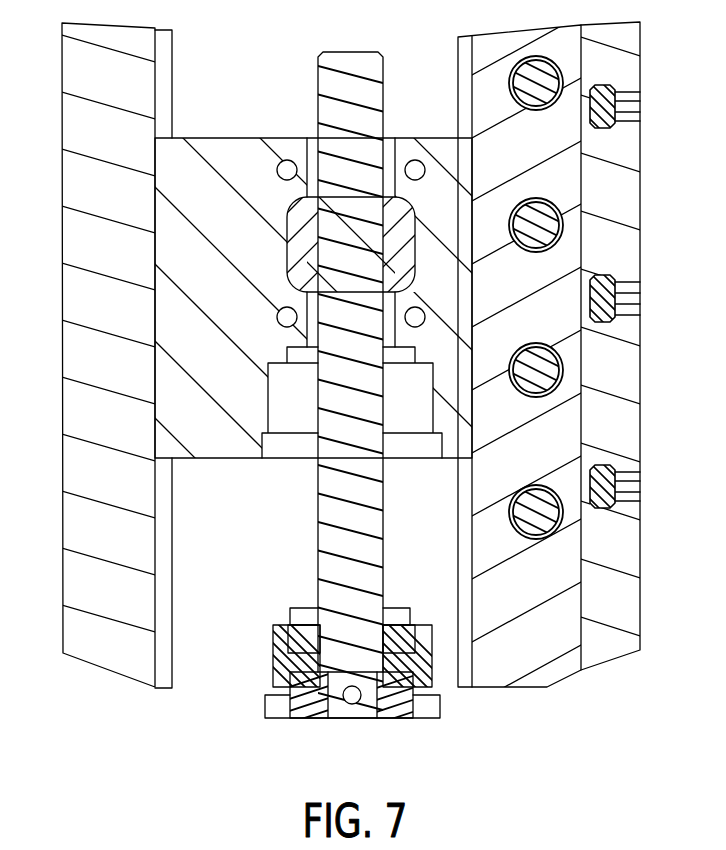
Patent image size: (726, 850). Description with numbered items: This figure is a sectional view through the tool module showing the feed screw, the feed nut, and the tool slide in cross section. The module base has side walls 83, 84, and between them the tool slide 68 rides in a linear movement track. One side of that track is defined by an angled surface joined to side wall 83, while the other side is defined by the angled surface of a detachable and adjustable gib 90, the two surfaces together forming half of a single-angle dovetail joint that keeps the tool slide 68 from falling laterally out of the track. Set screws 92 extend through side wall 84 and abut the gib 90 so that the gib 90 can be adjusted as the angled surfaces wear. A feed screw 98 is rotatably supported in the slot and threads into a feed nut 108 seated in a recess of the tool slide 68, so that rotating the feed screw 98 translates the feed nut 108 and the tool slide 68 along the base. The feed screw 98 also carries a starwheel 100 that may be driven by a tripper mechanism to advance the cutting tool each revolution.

The tool slide 68 is at (226, 138).
The side wall 83 is at (62, 282).
The side wall 84 is at (640, 200).
The gib 90 is at (530, 688).
The set screws 92 is at (642, 107).
The feed screw 98 is at (384, 527).
The starwheel 100 is at (410, 718).
The feed nut 108 is at (415, 243).